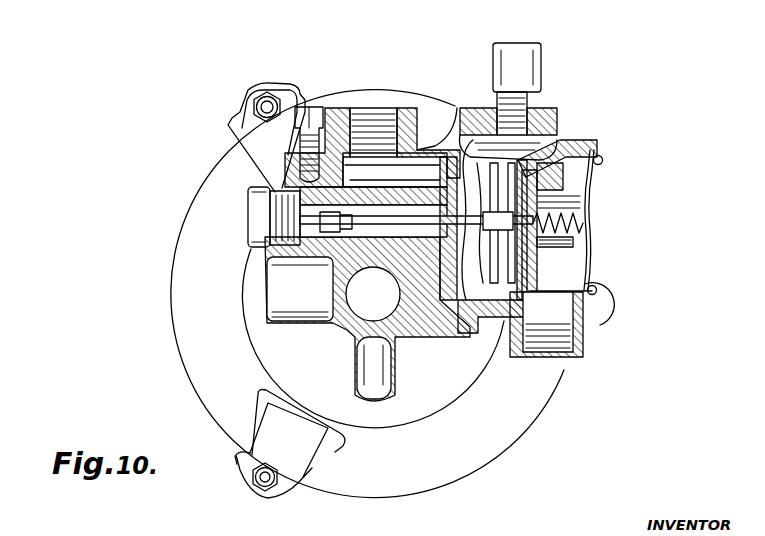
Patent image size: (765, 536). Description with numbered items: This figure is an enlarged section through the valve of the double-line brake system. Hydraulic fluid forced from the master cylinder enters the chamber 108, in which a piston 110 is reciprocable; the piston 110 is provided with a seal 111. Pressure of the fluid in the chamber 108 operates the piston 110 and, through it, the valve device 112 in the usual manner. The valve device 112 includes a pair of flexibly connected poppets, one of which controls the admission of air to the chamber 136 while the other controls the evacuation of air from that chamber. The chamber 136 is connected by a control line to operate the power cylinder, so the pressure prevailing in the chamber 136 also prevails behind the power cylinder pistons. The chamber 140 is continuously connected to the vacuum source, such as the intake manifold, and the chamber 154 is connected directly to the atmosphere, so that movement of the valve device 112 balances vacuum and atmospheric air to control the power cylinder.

The chamber 108 is at (327, 220).
The piston 110 is at (350, 230).
The seal 111 is at (343, 175).
The valve device 112 is at (462, 330).
The chamber 136 is at (552, 137).
The chamber 140 is at (407, 168).
The chamber 154 is at (573, 268).